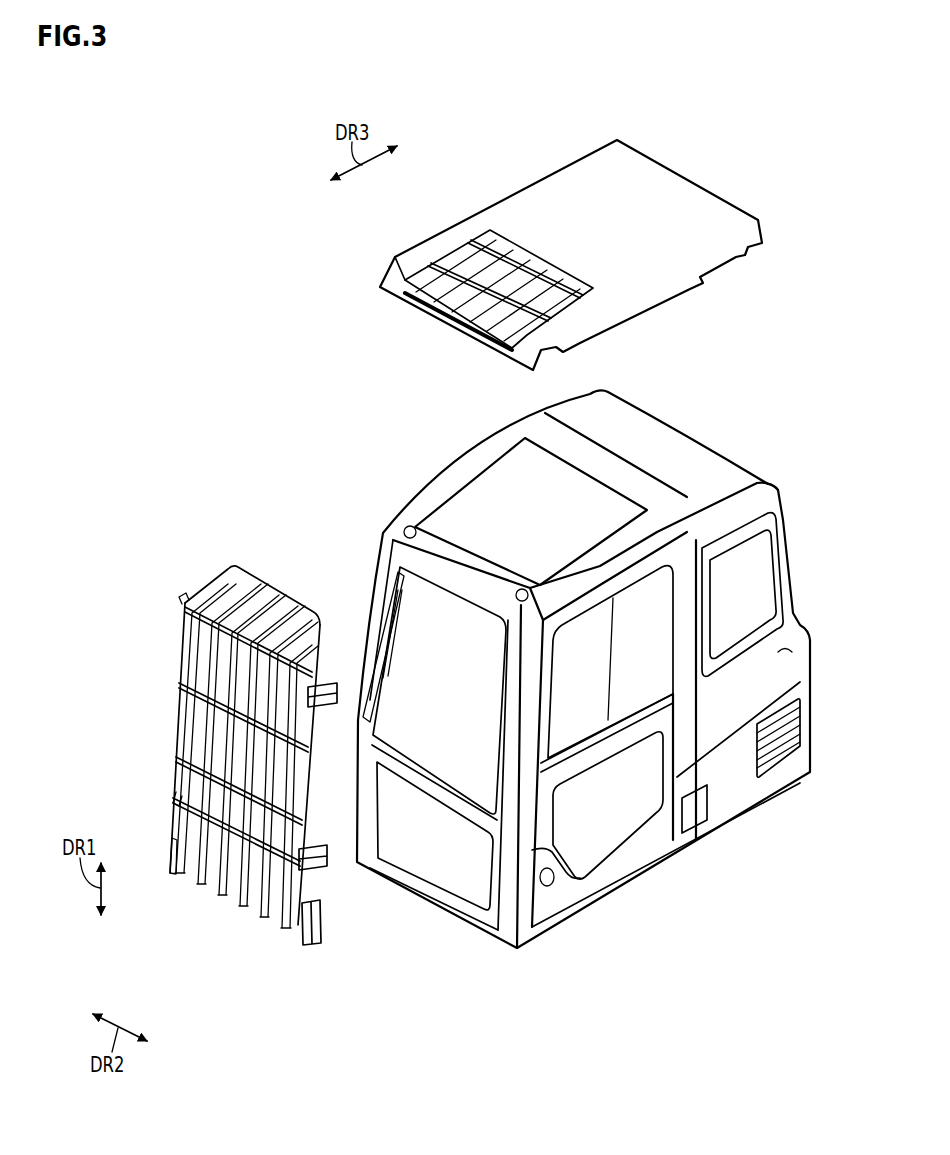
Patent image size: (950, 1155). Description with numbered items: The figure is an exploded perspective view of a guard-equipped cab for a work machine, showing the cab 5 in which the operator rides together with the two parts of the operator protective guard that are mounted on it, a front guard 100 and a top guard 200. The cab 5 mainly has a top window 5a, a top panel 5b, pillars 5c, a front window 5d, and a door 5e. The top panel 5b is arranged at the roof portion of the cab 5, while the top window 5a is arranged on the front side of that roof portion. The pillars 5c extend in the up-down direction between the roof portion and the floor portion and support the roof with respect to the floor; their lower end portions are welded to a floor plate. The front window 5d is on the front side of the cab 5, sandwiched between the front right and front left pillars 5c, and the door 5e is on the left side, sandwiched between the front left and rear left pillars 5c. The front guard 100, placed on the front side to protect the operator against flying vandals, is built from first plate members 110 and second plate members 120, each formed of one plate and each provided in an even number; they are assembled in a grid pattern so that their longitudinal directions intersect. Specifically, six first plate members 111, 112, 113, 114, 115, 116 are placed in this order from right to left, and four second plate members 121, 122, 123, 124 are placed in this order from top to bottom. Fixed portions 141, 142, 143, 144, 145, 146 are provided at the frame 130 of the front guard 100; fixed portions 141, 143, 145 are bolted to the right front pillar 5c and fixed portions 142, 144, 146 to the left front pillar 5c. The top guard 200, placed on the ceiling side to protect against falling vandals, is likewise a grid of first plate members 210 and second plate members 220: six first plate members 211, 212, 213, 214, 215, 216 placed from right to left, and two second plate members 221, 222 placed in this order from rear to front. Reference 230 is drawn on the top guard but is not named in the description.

The cab for the work machine 5 is at (583, 652).
The top window 5a is at (522, 511).
The top panel 5b is at (582, 444).
The pillars 5c is at (492, 785).
The front window 5d is at (439, 754).
The door 5e is at (608, 836).
The front guard 100 is at (225, 760).
The first plate members 110 is at (252, 812).
The first plate member 111 is at (188, 795).
The first plate member 112 is at (224, 795).
The first plate member 113 is at (252, 801).
The first plate member 114 is at (272, 806).
The first plate member 115 is at (294, 813).
The first plate member 116 is at (325, 826).
The second plate members 120 is at (195, 734).
The second plate member 121 is at (217, 640).
The second plate member 122 is at (215, 714).
The second plate member 123 is at (212, 783).
The second plate member 124 is at (211, 823).
The frame 130 is at (252, 584).
The fixed portion 141 is at (198, 570).
The fixed portion 142 is at (329, 670).
The fixed portion 143 is at (151, 809).
The fixed portion 144 is at (330, 881).
The fixed portion 145 is at (149, 859).
The fixed portion 146 is at (324, 941).
The top guard 200 is at (522, 267).
The first plate members 210 is at (431, 317).
The first plate member 211 is at (410, 266).
The first plate member 212 is at (419, 278).
The first plate member 213 is at (427, 294).
The first plate member 214 is at (436, 310).
The first plate member 215 is at (444, 325).
The first plate member 216 is at (452, 341).
The second plate members 220 is at (496, 233).
The second plate member 221 is at (516, 232).
The second plate member 222 is at (481, 244).
The roof plate 230 is at (499, 247).